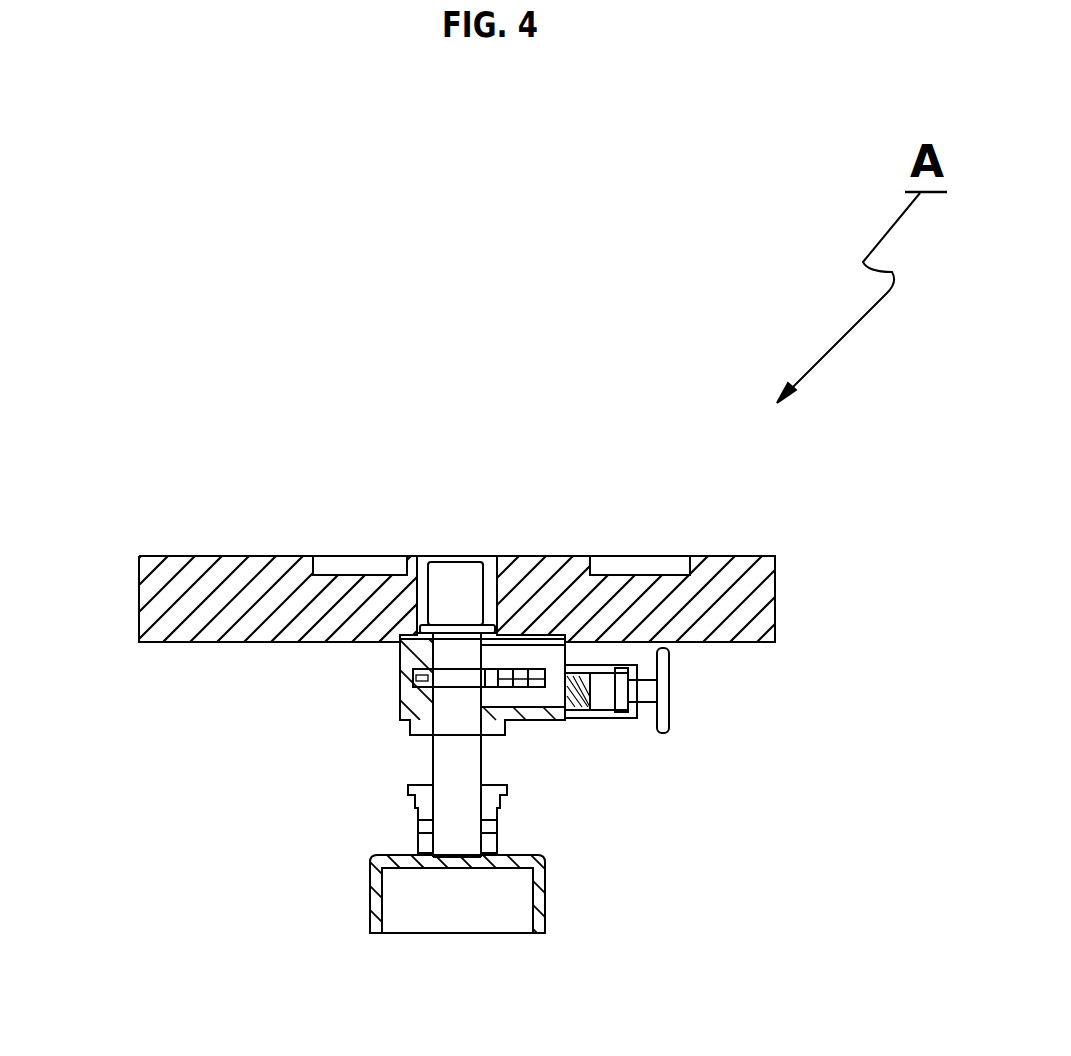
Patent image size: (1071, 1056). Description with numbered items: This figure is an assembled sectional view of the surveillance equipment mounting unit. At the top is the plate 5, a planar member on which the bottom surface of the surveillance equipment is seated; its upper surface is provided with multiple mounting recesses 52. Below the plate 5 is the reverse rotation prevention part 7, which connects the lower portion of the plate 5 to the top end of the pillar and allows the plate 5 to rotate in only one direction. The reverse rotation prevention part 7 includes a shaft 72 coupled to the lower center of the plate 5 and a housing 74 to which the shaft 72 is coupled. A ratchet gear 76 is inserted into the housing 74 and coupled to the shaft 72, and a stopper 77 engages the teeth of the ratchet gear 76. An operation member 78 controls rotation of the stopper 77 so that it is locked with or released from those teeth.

The plate 5 is at (139, 598).
The mounting recesses 52 is at (358, 563).
The reverse rotation prevention part 7 is at (622, 847).
The shaft 72 is at (445, 760).
The housing 74 is at (400, 690).
The ratchet gear 76 is at (413, 673).
The stopper 77 is at (515, 668).
The operation member 78 is at (670, 703).